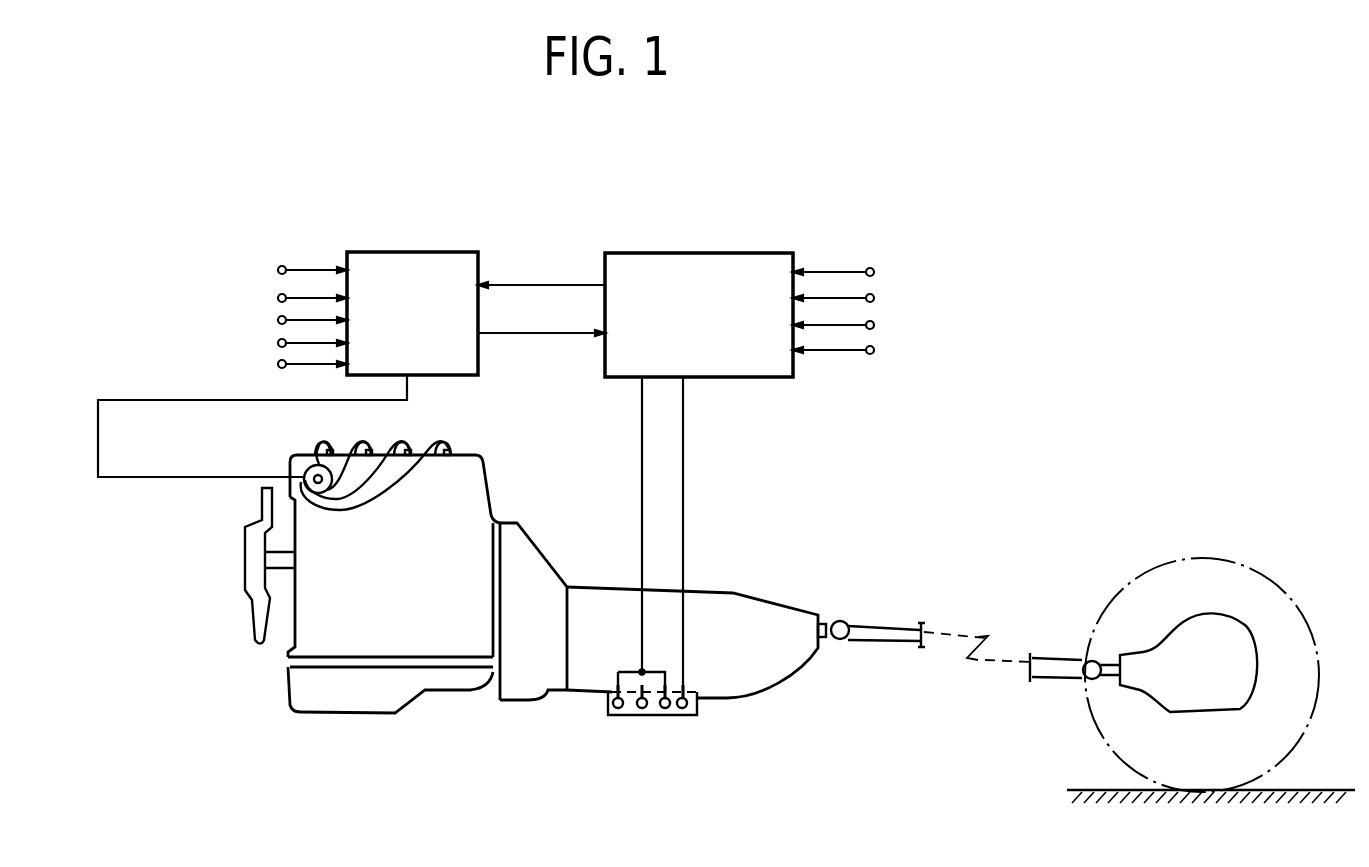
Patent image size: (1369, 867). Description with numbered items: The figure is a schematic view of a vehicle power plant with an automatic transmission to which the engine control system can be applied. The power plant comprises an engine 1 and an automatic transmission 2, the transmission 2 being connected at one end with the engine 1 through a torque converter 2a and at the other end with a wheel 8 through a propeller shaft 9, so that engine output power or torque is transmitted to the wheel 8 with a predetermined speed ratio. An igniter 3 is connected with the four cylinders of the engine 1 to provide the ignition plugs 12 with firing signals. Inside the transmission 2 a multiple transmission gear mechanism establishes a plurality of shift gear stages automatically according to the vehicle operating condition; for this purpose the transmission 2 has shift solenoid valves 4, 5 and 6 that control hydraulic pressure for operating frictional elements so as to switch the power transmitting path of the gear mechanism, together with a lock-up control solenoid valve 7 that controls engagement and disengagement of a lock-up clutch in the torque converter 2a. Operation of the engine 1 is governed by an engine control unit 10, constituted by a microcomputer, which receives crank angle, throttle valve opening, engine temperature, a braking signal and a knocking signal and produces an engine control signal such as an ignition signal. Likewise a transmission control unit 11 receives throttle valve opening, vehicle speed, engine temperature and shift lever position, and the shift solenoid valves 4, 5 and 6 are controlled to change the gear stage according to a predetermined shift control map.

The engine 1 is at (427, 627).
The automatic transmission 2 is at (740, 667).
The torque converter 2a is at (540, 544).
The igniter 3 is at (292, 468).
The shift solenoid valve 4 is at (618, 718).
The shift solenoid valve 5 is at (632, 717).
The shift solenoid valve 6 is at (655, 717).
The lock-up control solenoid valve 7 is at (680, 717).
The wheel 8 is at (1262, 572).
The propeller shaft 9 is at (880, 628).
The engine control unit 10 is at (423, 252).
The transmission control unit 11 is at (717, 253).
The ignition plugs 12 is at (456, 454).